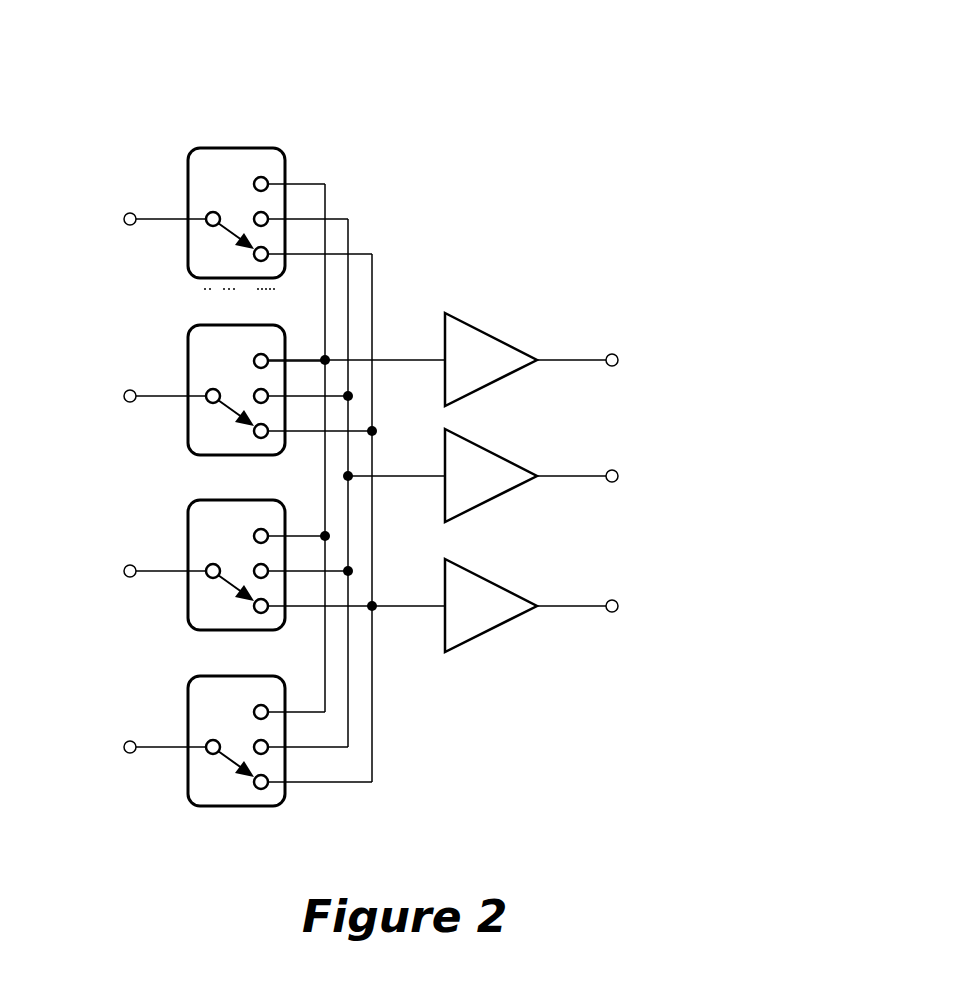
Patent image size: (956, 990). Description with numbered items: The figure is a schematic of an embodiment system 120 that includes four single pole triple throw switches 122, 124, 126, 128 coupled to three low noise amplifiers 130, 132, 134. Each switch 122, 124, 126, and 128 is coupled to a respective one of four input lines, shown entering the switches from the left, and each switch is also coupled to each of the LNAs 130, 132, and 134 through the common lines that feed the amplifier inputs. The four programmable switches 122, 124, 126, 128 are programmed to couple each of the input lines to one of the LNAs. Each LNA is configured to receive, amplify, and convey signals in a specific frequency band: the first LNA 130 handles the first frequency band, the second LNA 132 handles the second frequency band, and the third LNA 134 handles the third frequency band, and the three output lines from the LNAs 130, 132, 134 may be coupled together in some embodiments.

The system 120 is at (556, 78).
The single pole triple throw switch 122 is at (188, 158).
The single pole triple throw switch 124 is at (188, 341).
The single pole triple throw switch 126 is at (188, 517).
The single pole triple throw switch 128 is at (188, 693).
The LNA 130 is at (507, 342).
The LNA 132 is at (507, 458).
The LNA 134 is at (507, 590).